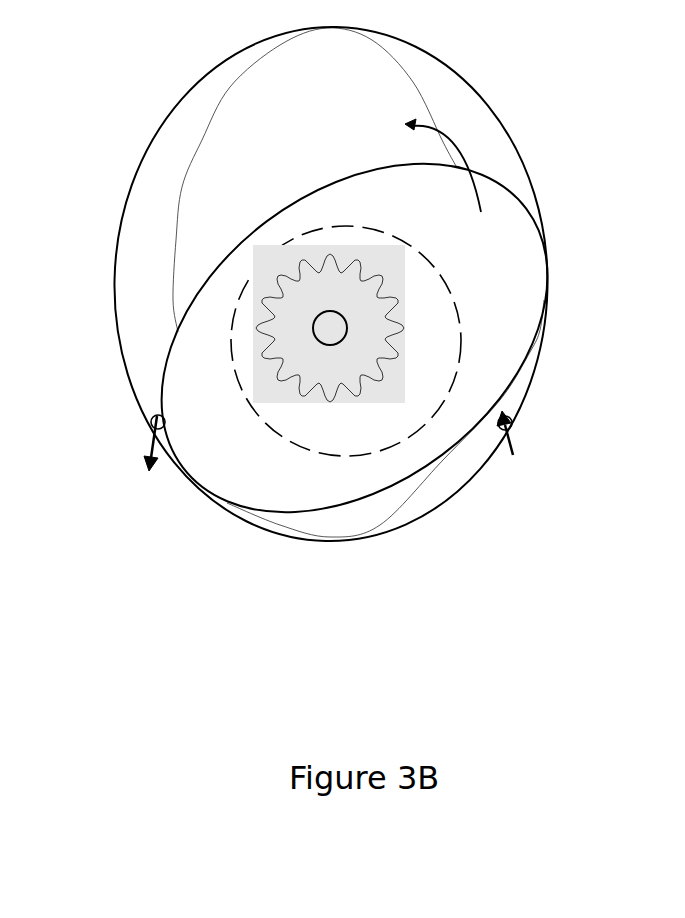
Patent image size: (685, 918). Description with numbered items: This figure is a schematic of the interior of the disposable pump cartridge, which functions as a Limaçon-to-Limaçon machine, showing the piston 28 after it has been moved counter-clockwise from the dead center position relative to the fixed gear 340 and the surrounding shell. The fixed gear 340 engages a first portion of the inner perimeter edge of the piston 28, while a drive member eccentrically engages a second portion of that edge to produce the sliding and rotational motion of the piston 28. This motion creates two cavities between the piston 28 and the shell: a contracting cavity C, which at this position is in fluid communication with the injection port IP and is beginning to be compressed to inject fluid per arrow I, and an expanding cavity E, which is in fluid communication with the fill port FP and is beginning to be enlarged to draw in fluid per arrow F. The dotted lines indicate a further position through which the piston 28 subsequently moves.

The contracting cavity C is at (166, 227).
The expanding cavity E is at (465, 487).
The piston 28 is at (489, 294).
The fixed gear 340 is at (375, 308).
The arrow I is at (131, 442).
The injection port IP is at (174, 468).
The arrow F is at (553, 457).
The fill port FP is at (514, 422).